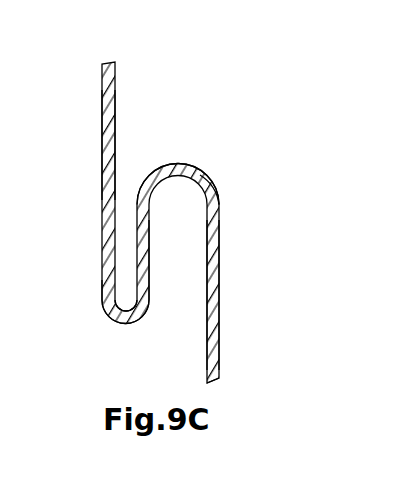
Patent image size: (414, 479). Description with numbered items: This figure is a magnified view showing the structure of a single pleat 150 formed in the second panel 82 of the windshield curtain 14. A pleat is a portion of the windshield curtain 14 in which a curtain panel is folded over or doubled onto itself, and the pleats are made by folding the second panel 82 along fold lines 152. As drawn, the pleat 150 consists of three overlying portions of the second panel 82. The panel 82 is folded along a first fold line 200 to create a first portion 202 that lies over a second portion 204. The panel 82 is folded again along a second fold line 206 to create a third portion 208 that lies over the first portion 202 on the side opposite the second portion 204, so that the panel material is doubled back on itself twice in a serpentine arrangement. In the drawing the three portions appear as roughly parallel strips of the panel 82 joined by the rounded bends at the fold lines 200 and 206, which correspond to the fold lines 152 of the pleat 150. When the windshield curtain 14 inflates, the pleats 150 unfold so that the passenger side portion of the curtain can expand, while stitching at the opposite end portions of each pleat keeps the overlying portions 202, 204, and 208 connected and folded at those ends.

The pleat 150 is at (53, 95).
The fold line 152 is at (209, 172).
The first fold line 200 is at (180, 164).
The first portion 202 is at (148, 254).
The second portion 204 is at (210, 267).
The second fold line 206 is at (125, 326).
The third portion 208 is at (108, 222).
The second panel 82 is at (210, 354).
The windshield curtain 14 is at (70, 354).